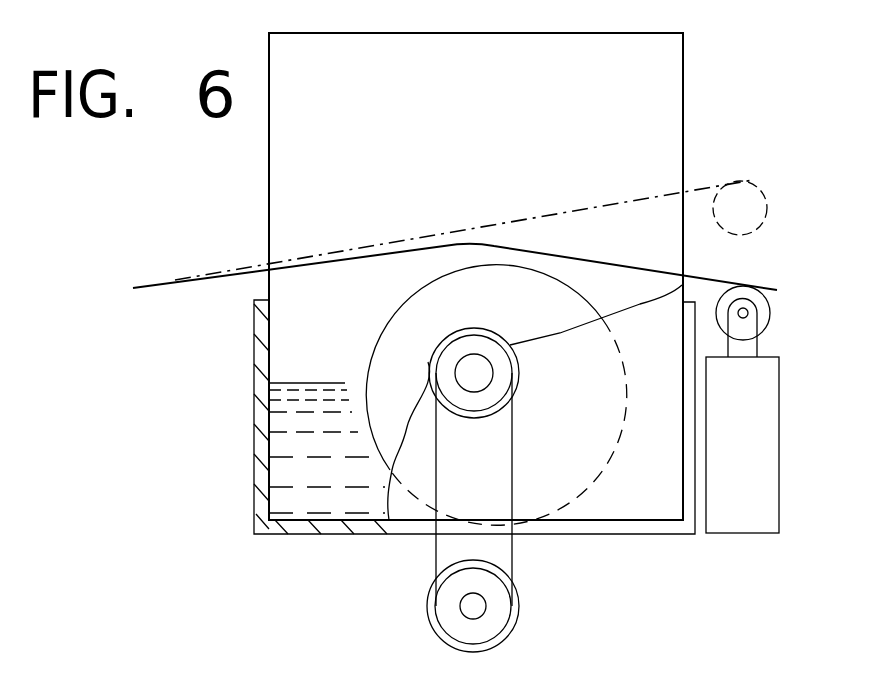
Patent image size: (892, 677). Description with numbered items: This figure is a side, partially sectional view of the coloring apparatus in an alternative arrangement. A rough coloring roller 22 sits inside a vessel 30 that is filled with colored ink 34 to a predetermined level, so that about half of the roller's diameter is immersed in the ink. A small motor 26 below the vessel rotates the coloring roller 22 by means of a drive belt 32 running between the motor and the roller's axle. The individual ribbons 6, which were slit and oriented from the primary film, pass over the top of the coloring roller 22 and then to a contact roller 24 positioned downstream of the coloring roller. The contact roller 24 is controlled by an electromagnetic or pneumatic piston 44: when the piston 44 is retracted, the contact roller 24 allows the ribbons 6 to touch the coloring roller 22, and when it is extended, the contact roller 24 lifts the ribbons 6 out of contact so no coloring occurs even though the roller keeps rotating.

The individual ribbons 6 is at (370, 243).
The coloring roller 22 is at (348, 342).
The contact roller 24 is at (752, 228).
The motor 26 is at (520, 612).
The vessel 30 is at (256, 388).
The drive belt 32 is at (515, 555).
The colored ink 34 is at (278, 446).
The piston 44 is at (766, 444).